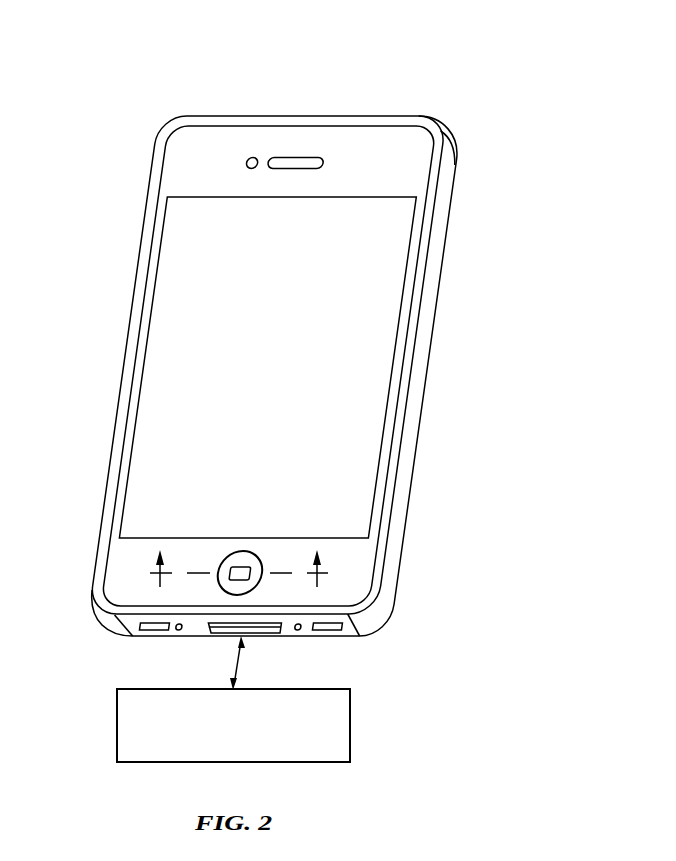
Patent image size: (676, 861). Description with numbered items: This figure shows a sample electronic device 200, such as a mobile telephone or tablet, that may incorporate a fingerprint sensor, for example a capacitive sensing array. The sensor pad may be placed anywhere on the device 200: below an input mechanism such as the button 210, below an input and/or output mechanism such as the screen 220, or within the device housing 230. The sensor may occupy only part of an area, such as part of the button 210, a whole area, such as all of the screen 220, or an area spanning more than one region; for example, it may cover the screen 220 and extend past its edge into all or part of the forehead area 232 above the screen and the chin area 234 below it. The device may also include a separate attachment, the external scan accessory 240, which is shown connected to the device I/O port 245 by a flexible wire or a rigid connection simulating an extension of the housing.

The electronic device 200 is at (283, 381).
The button 210 is at (217, 587).
The screen 220 is at (405, 228).
The device housing 230 is at (458, 177).
The forehead area 232 is at (380, 134).
The chin area 234 is at (360, 577).
The external scan accessory 240 is at (114, 738).
The device I/O port 245 is at (216, 640).